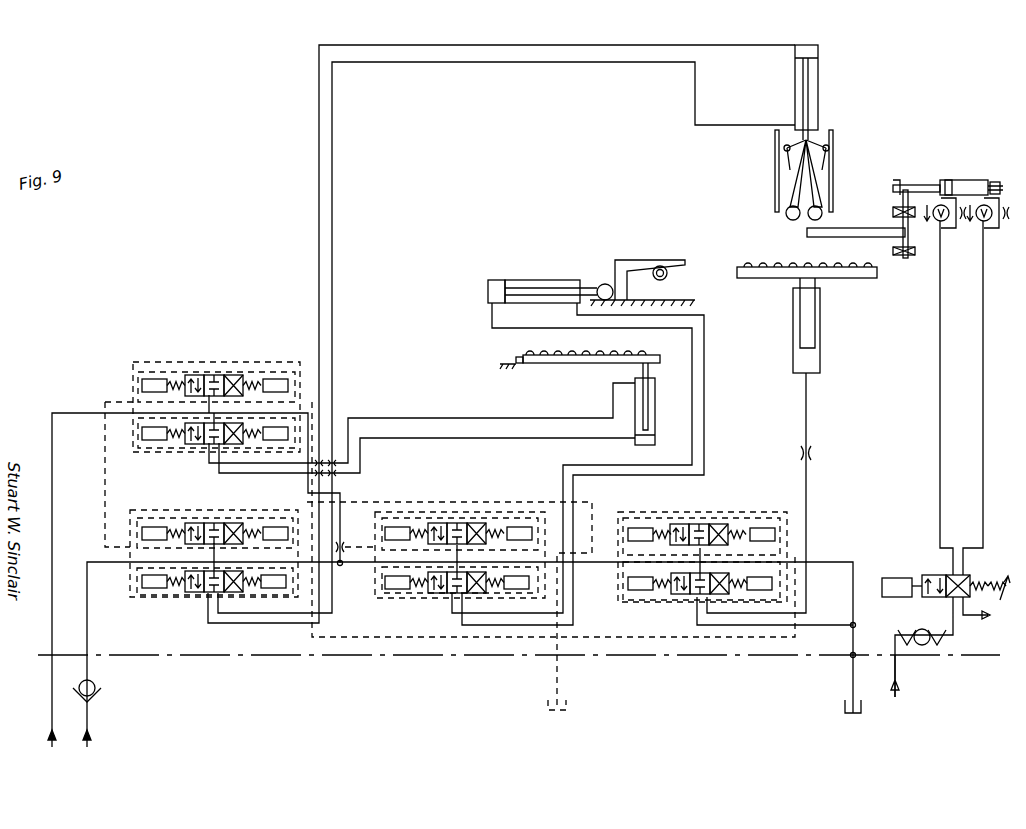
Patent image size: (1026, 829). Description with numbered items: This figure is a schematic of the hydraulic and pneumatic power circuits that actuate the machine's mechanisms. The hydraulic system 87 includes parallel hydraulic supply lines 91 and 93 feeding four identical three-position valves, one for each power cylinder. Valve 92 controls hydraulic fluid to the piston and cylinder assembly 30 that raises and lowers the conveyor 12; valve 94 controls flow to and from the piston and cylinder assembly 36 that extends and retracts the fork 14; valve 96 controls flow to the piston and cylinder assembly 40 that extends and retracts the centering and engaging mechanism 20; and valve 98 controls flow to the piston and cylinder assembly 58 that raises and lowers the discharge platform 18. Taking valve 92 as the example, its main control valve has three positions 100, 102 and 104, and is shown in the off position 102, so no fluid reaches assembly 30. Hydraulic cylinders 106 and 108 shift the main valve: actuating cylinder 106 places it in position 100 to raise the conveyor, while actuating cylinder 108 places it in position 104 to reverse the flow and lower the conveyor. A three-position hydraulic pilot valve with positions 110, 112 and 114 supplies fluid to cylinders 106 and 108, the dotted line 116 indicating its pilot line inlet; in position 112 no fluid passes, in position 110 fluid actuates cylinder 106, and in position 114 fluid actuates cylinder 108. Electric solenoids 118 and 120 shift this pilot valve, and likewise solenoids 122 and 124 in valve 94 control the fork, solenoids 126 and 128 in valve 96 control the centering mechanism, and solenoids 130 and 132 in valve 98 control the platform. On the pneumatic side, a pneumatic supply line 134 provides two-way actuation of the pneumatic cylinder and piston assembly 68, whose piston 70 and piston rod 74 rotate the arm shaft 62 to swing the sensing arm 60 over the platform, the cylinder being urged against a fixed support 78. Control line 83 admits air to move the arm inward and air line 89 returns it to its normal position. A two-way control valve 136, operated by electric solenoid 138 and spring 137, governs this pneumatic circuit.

The conveyor 12 is at (584, 365).
The fork 14 is at (615, 263).
The discharge platform 18 is at (850, 278).
The centering and engaging mechanism 20 is at (842, 146).
The hydraulic piston and cylinder assembly 30 is at (655, 400).
The hydraulic piston and cylinder assembly 36 is at (533, 280).
The hydraulic piston and cylinder assembly 40 is at (818, 86).
The hydraulic piston and cylinder assembly 58 is at (820, 355).
The sensing arm 60 is at (847, 228).
The arm shaft 62 is at (908, 242).
The pneumatic cylinder and piston assembly 68 is at (965, 180).
The piston 70 is at (948, 180).
The piston rod 74 is at (908, 185).
The fixed support 78 is at (995, 182).
The control line 83 is at (940, 338).
The hydraulic system 87 is at (316, 212).
The air line 89 is at (985, 315).
The hydraulic supply line 91 is at (46, 413).
The hydraulic valve 92 is at (209, 394).
The hydraulic supply line 93 is at (87, 562).
The hydraulic valve 94 is at (460, 525).
The hydraulic valve 96 is at (247, 559).
The hydraulic valve 98 is at (700, 529).
The main control valve position 100 is at (191, 444).
The main control valve position 102 is at (214, 445).
The main control valve position 104 is at (234, 445).
The hydraulic cylinder 106 is at (152, 440).
The hydraulic cylinder 108 is at (276, 441).
The pilot valve position 110 is at (193, 375).
The pilot valve position 112 is at (213, 375).
The pilot valve position 114 is at (233, 375).
The hydraulic pilot line inlet 116 is at (105, 400).
The electric solenoid 118 is at (148, 379).
The electric solenoid 120 is at (276, 379).
The electric solenoid 122 is at (396, 527).
The electric solenoid 124 is at (515, 527).
The electric solenoid 126 is at (155, 527).
The electric solenoid 128 is at (290, 534).
The electric solenoid 130 is at (644, 528).
The electric solenoid 132 is at (760, 528).
The pneumatic supply line 134 is at (898, 672).
The two-way control valve 136 is at (970, 577).
The spring 137 is at (996, 600).
The electric solenoid 138 is at (893, 578).